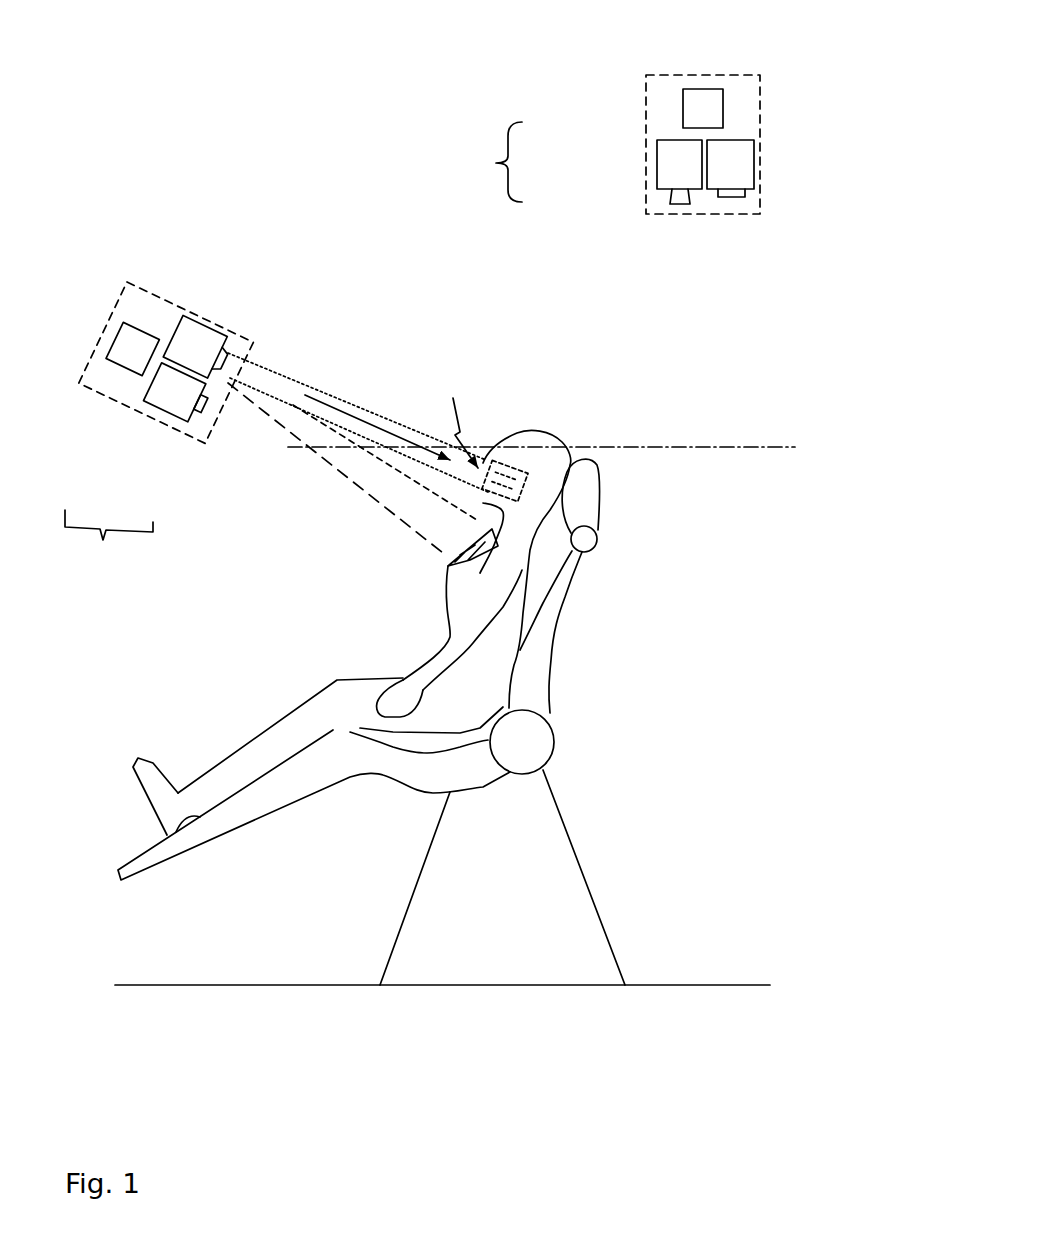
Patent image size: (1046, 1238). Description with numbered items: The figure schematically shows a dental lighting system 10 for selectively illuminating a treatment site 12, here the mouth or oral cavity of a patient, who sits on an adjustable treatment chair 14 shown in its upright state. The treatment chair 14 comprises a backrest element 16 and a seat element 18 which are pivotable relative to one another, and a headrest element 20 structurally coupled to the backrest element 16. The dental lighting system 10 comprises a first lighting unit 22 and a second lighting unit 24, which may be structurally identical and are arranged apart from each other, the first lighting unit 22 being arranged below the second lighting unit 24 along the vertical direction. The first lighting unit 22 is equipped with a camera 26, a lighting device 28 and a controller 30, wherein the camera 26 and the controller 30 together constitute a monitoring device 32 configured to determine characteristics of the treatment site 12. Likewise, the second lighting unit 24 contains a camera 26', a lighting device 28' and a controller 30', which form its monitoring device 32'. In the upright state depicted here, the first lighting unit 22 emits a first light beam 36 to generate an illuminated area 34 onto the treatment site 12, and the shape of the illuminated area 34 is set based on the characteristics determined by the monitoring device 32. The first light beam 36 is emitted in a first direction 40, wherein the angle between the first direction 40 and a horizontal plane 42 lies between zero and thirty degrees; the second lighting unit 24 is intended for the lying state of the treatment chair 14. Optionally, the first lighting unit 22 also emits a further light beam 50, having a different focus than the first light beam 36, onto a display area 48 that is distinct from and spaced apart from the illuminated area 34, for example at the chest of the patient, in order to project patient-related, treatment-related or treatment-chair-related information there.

The dental lighting system 10 is at (439, 521).
The treatment site 12 is at (457, 418).
The treatment chair 14 is at (429, 720).
The backrest element 16 is at (605, 632).
The seat element 18 is at (314, 813).
The headrest element 20 is at (642, 505).
The first lighting unit 22 is at (166, 329).
The second lighting unit 24 is at (746, 115).
The camera 26 is at (165, 444).
The lighting device 28 is at (244, 307).
The controller 30 is at (117, 420).
The monitoring device 32 is at (140, 450).
The camera 26' is at (612, 172).
The lighting device 28' is at (787, 181).
The controller 30' is at (622, 126).
The monitoring device 32' is at (587, 146).
The illuminated area 34 is at (517, 413).
The first light beam 36 is at (359, 390).
The first direction 40 is at (385, 412).
The horizontal plane 42 is at (541, 399).
The display area 48 is at (433, 559).
The further light beam 50 is at (335, 474).